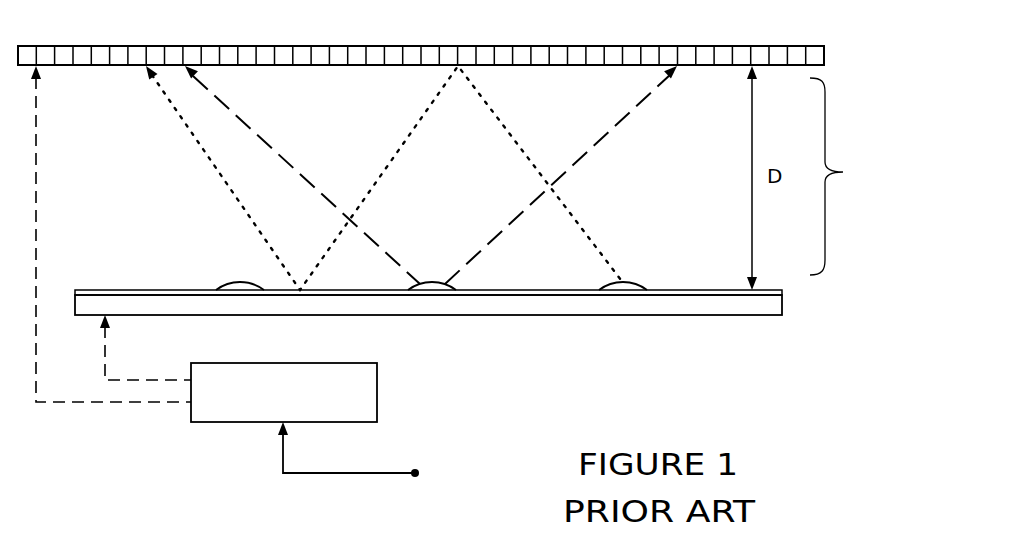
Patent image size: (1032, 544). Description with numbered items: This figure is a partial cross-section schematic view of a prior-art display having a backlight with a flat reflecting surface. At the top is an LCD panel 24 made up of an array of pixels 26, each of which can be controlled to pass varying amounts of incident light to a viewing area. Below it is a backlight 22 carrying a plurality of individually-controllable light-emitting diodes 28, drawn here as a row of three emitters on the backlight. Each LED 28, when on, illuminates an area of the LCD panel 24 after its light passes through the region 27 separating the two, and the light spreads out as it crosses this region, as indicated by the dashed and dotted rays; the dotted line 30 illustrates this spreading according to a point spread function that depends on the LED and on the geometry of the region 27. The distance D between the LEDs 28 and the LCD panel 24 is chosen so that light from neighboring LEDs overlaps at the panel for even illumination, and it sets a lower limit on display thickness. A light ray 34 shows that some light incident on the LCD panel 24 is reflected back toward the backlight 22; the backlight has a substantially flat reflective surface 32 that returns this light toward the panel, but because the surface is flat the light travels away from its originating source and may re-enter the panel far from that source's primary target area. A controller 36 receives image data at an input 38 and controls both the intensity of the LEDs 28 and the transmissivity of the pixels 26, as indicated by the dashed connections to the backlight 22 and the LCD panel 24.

The backlight 22 is at (808, 290).
The LCD panel 24 is at (824, 52).
The pixels 26 is at (580, 46).
The region 27 is at (849, 176).
The light-emitting diodes 28 is at (231, 282).
The dotted line 30 is at (617, 128).
The reflective surface 32 is at (147, 290).
The light ray 34 is at (193, 138).
The controller 36 is at (377, 393).
The input 38 is at (283, 455).